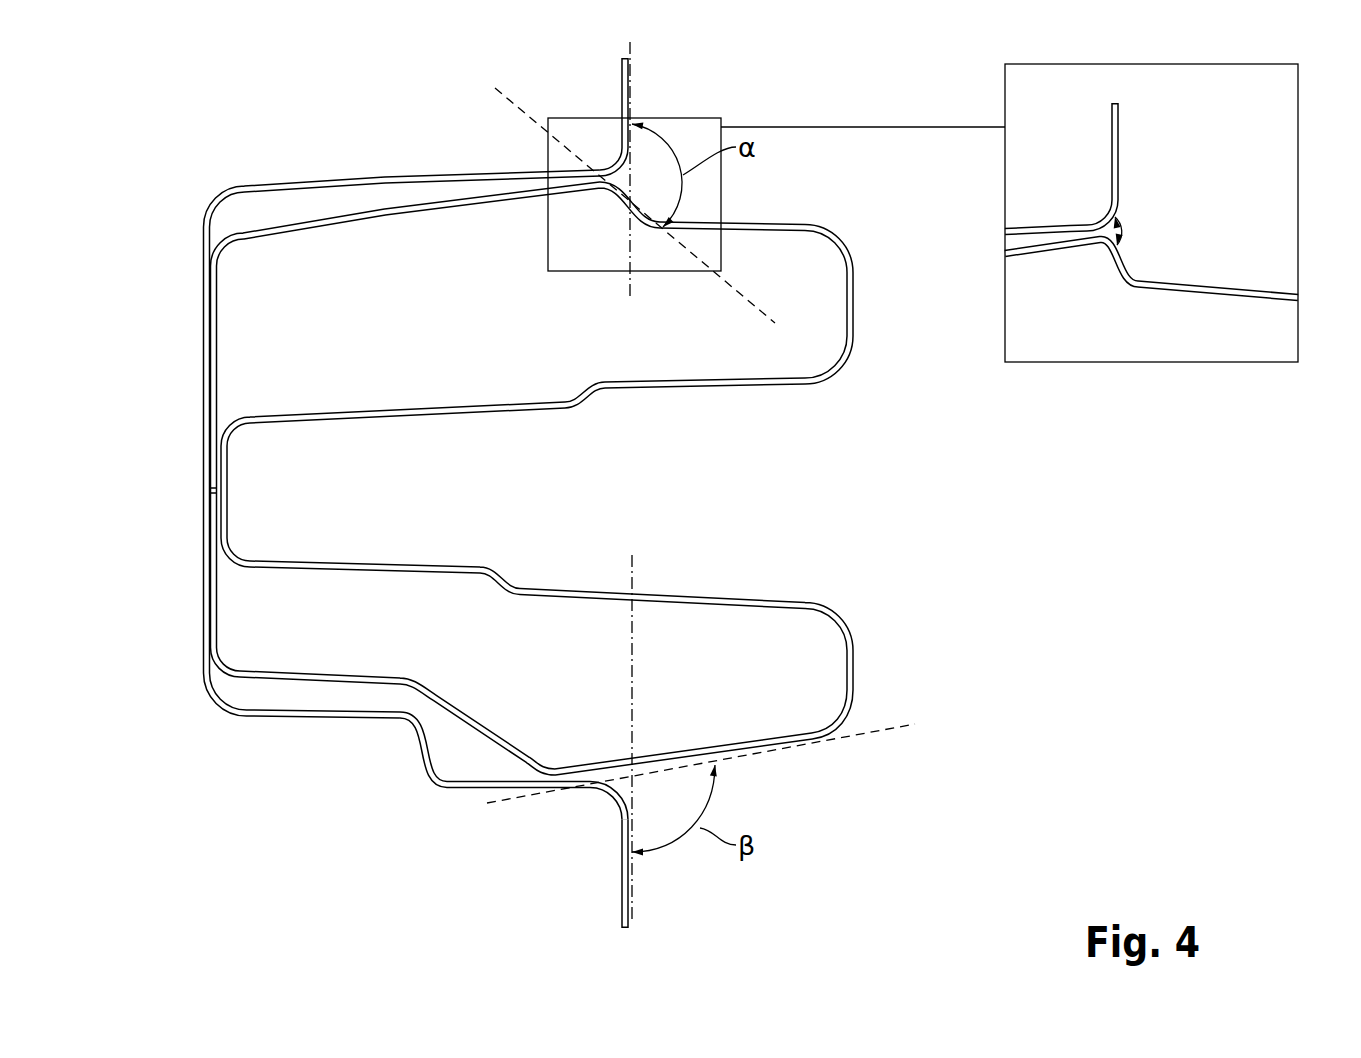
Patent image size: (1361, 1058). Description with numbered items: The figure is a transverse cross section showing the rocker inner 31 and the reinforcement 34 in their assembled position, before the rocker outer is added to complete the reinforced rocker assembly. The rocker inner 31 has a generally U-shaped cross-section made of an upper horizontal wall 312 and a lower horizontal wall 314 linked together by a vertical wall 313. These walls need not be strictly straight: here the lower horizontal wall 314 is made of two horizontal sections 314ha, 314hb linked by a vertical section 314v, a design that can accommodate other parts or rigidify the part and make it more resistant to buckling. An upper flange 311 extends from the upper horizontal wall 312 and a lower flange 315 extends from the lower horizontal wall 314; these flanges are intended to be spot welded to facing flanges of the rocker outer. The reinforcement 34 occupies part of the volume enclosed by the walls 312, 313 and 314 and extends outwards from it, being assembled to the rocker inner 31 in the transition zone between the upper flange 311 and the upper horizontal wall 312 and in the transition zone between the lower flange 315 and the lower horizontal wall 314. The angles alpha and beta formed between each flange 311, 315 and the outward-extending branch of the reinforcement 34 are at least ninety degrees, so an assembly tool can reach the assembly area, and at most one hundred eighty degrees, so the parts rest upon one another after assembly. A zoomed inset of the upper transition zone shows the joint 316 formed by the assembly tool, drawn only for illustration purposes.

The rocker inner 31 is at (178, 207).
The upper flange 311 is at (1108, 139).
The upper horizontal wall 312 is at (361, 171).
The vertical wall 313 is at (199, 474).
The lower horizontal wall 314 is at (437, 795).
The horizontal section 314ha is at (239, 722).
The vertical section 314v is at (418, 746).
The horizontal section 314hb is at (576, 806).
The lower flange 315 is at (638, 910).
The joint 316 is at (1130, 230).
The reinforcement 34 is at (1182, 300).